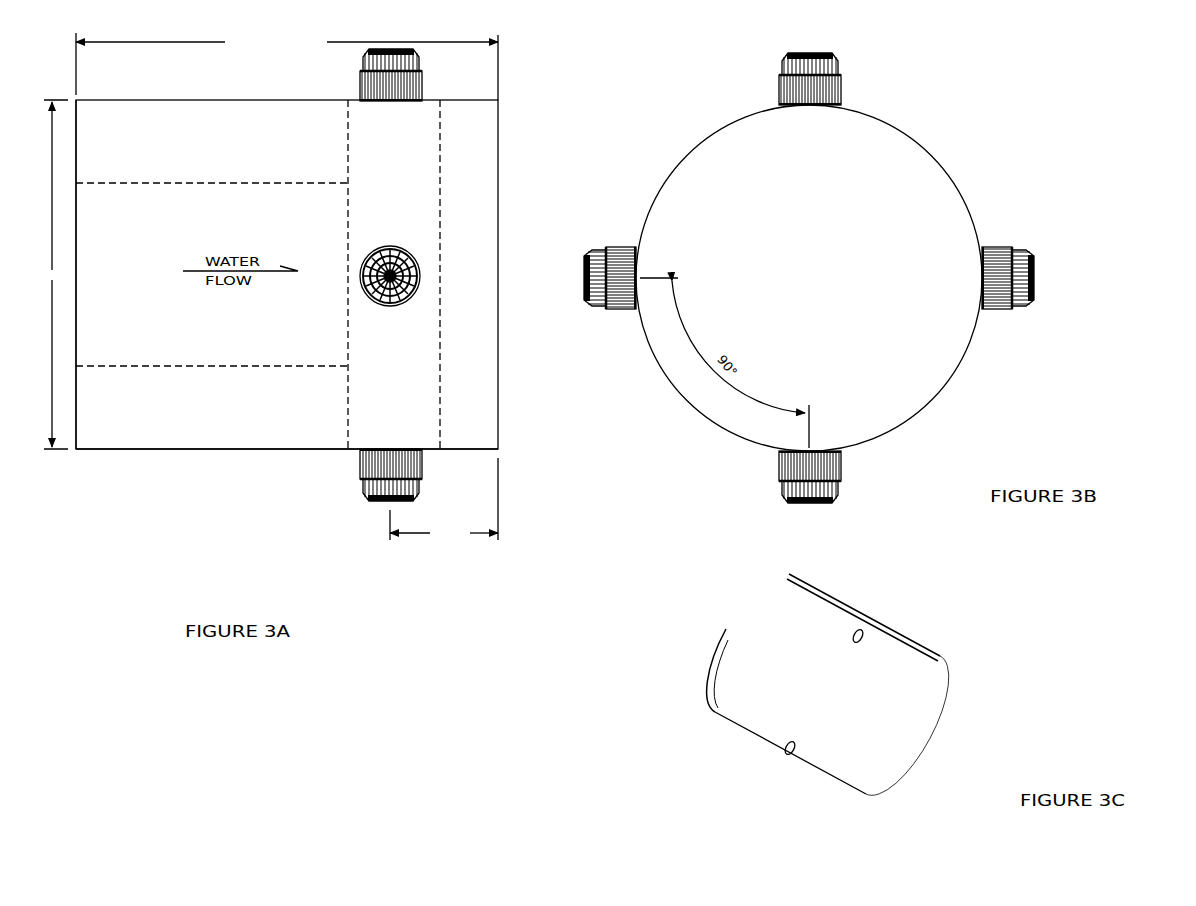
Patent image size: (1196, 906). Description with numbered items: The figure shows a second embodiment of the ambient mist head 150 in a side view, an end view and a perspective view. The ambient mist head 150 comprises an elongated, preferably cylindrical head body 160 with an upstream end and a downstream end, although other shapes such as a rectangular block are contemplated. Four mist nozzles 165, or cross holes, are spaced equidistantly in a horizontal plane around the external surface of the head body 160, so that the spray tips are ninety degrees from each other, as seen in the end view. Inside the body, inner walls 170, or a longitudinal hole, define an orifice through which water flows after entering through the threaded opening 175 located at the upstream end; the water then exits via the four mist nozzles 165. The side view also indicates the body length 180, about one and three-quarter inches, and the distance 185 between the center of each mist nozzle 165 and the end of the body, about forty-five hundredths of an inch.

In FIG. 3A, the ambient mist head 150 is at (136, 467).
In FIG. 3B, the ambient mist head 150 is at (940, 164).
In FIG. 3C, the ambient mist head 150 is at (953, 637).
In FIG. 3A, the head body 160 is at (197, 432).
In FIG. 3C, the head body 160 is at (755, 623).
In FIG. 3A, the mist nozzles 165 is at (412, 252).
In FIG. 3B, the mist nozzles 165 is at (772, 75).
In FIG. 3C, the mist nozzles 165 is at (853, 638).
In FIG. 3A, the inner walls 170 is at (142, 183).
In FIG. 3A, the threaded opening 175 is at (76, 285).
In FIG. 3A, the body length 180 is at (287, 66).
In FIG. 3A, the distance 185 is at (444, 499).